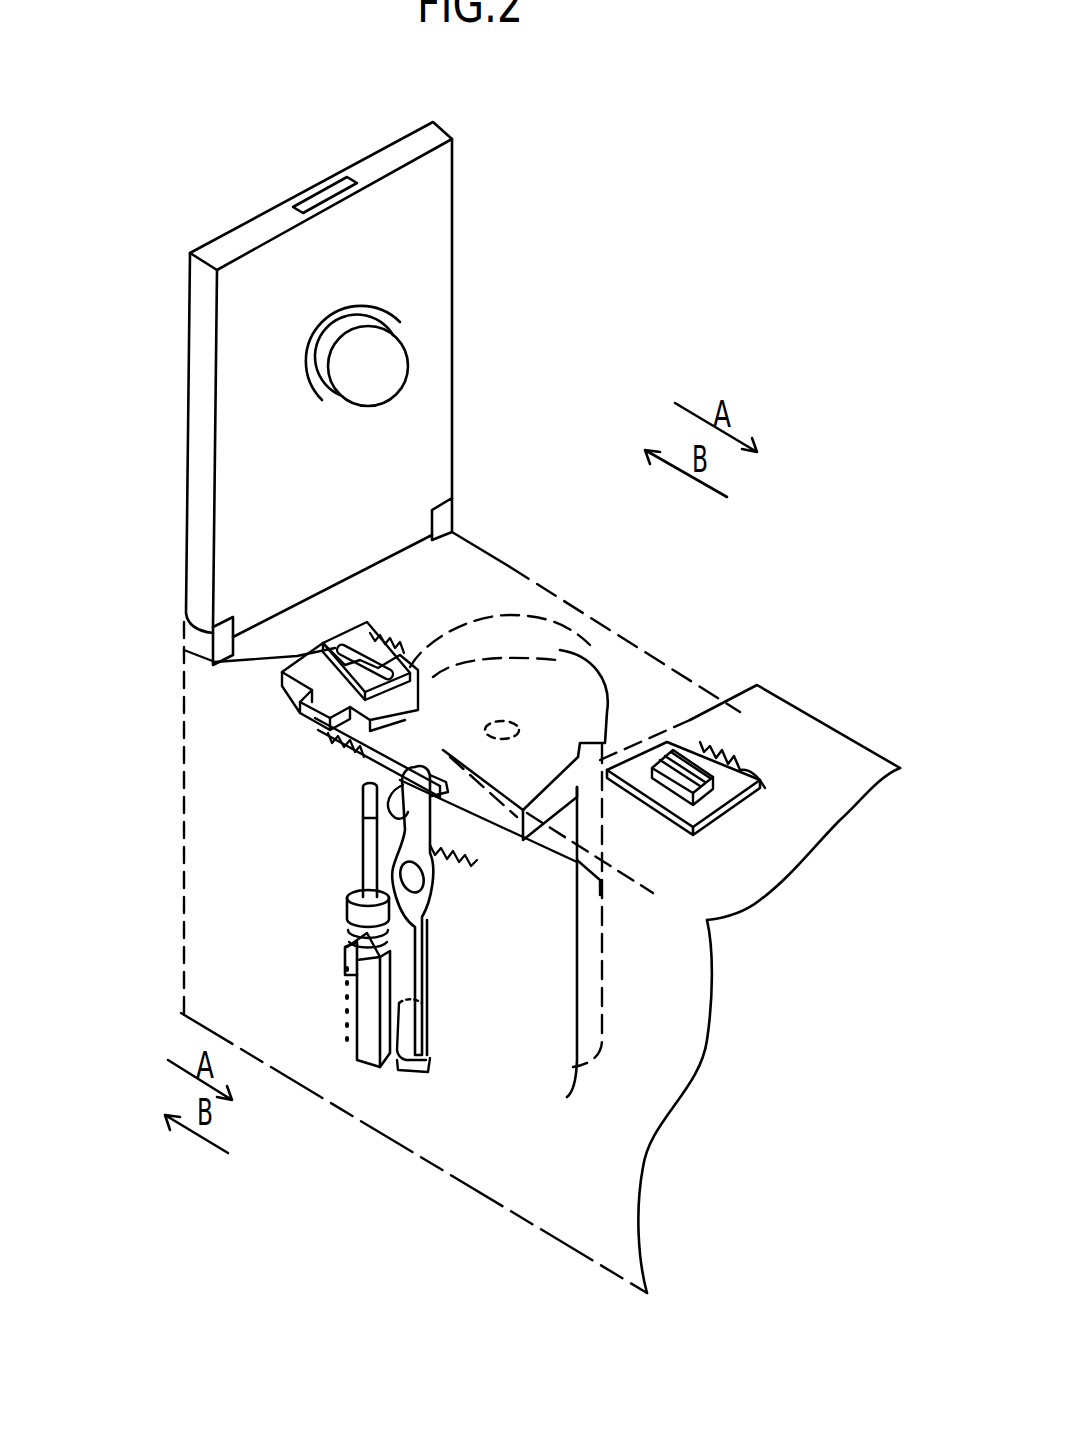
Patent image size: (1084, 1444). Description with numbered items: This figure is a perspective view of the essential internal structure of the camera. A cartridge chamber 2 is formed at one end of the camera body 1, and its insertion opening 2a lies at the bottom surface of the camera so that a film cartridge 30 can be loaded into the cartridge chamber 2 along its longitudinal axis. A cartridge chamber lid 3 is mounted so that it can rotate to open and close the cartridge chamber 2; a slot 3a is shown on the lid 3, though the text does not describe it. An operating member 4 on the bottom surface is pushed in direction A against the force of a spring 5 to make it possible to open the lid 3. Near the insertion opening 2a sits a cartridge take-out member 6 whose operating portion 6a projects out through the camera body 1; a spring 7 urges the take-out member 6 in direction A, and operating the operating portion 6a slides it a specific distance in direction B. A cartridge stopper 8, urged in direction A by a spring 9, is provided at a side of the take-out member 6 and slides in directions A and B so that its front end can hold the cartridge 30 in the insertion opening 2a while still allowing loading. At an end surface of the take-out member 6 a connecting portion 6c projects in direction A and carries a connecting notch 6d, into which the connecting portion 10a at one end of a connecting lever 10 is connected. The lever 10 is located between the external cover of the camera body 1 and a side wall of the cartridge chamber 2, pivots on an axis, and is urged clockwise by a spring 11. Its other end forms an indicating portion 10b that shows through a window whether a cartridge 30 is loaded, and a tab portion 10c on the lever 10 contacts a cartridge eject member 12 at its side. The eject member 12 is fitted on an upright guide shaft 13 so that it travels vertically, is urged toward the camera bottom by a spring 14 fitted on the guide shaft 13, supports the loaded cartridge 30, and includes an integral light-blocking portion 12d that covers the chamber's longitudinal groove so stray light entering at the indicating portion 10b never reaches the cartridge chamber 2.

The camera body 1 is at (180, 822).
The cartridge chamber 2 is at (560, 650).
The insertion opening 2a is at (537, 627).
The cartridge chamber lid 3 is at (455, 237).
The slot in lid 3a is at (318, 198).
The operating member 4 is at (722, 810).
The spring 5 is at (737, 760).
The cartridge take-out member 6 is at (287, 690).
The operating portion 6a is at (282, 698).
The connecting portion 6c is at (603, 880).
The connecting notch 6d is at (395, 778).
The spring 7 is at (330, 745).
The cartridge stopper 8 is at (327, 637).
The spring 9 is at (393, 641).
The connecting lever 10 is at (442, 970).
The connecting portion 10a is at (440, 762).
The indicating portion 10b is at (427, 1030).
The tab portion 10c is at (345, 958).
The spring 11 is at (470, 860).
The cartridge eject member 12 is at (360, 1025).
The light-blocking portion 12d is at (363, 818).
The guide shaft 13 is at (363, 843).
The spring 14 is at (347, 1007).
The film cartridge 30 is at (557, 707).